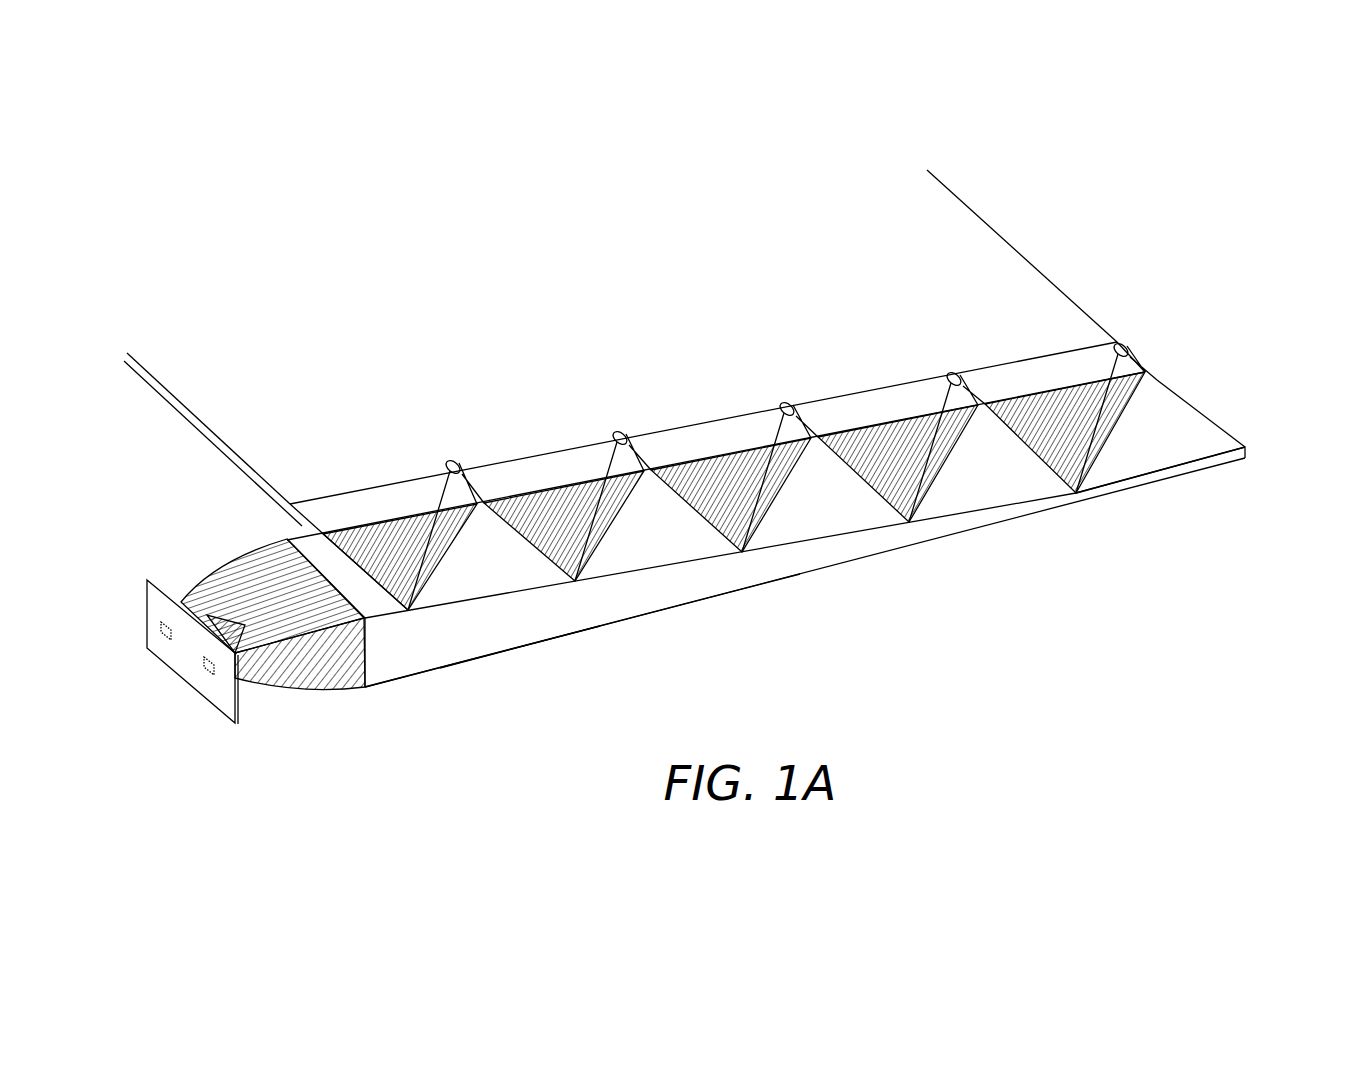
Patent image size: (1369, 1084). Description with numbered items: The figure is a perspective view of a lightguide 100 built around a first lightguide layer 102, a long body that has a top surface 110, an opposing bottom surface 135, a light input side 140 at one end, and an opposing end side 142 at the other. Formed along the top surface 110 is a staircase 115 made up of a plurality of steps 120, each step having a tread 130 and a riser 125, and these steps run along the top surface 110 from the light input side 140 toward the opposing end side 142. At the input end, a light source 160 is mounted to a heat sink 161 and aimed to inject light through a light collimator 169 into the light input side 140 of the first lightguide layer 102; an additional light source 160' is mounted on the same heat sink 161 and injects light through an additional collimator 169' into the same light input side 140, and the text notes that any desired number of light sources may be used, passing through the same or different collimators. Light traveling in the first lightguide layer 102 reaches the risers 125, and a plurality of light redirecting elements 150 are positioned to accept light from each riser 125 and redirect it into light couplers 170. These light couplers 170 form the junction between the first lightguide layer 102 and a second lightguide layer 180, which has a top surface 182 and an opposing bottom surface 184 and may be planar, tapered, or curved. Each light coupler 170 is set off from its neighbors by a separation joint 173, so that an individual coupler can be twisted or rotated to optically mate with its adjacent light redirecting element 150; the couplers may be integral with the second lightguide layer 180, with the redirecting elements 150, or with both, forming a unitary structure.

The lightguide 100 is at (165, 247).
The first lightguide layer 102 is at (567, 612).
The top surface 110 is at (312, 556).
The staircase 115 is at (450, 674).
The steps 120 is at (1003, 503).
The risers 125 is at (742, 553).
The treads 130 is at (815, 510).
The bottom surface 135 is at (482, 659).
The light input side 140 is at (369, 658).
The opposing end side 142 is at (1248, 452).
The light redirecting elements 150 is at (432, 527).
The light source 160 is at (175, 693).
The additional light source 160' is at (121, 636).
The heat sink 161 is at (150, 584).
The light collimator 169 is at (300, 684).
The additional collimator 169' is at (272, 582).
The light couplers 170 is at (366, 497).
The separation joint 173 is at (453, 458).
The second lightguide layer 180 is at (962, 225).
The top surface 182 is at (188, 387).
The bottom surface 184 is at (217, 447).